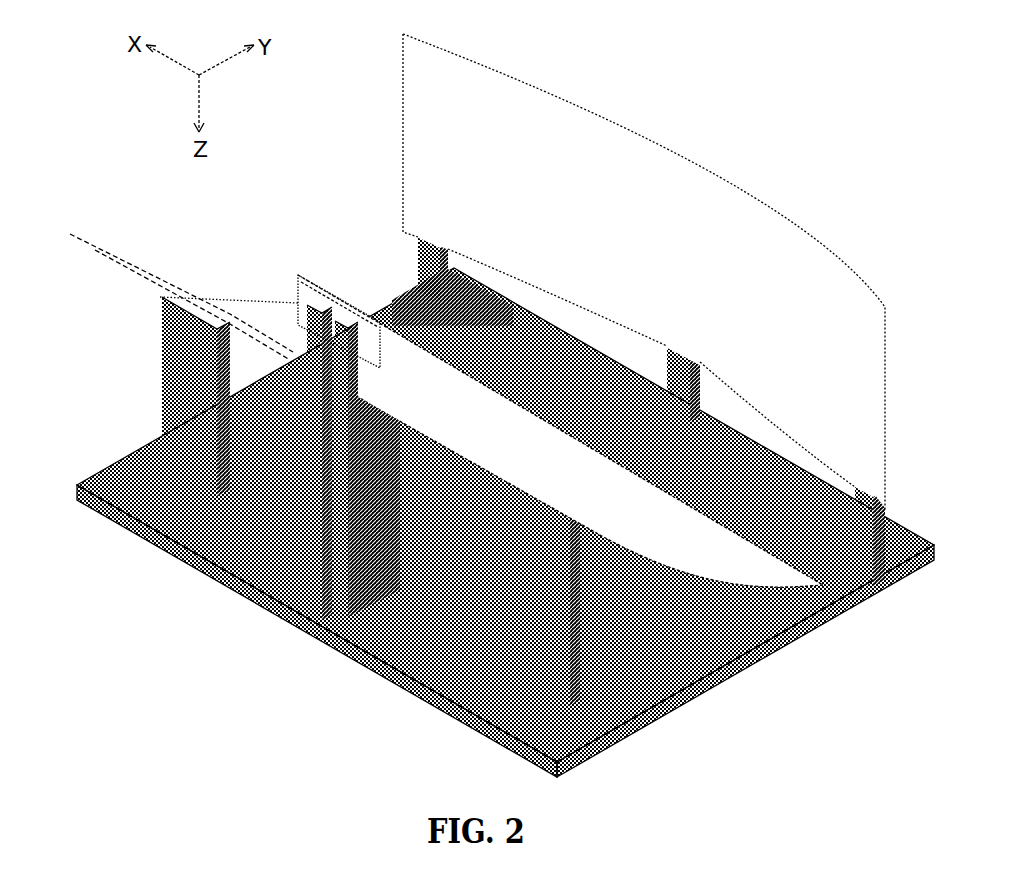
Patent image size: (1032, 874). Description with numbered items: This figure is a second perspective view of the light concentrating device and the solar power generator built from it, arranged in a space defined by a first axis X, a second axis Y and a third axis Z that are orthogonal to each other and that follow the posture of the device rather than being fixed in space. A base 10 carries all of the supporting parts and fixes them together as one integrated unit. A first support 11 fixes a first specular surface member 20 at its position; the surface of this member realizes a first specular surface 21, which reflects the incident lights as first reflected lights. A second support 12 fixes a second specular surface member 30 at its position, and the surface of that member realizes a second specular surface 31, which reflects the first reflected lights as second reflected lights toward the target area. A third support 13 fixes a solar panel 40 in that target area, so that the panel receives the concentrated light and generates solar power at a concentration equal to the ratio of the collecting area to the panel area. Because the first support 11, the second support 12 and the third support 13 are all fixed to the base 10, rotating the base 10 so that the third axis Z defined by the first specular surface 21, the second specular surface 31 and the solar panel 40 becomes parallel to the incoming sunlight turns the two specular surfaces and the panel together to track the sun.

The base 10 is at (653, 688).
The first support 11 is at (567, 628).
The second support 12 is at (853, 547).
The third support 13 is at (312, 483).
The first specular surface member 20 is at (420, 399).
The first specular surface 21 is at (478, 427).
The second specular surface member 30 is at (644, 272).
The second specular surface 31 is at (664, 244).
The solar panel 40 is at (298, 276).